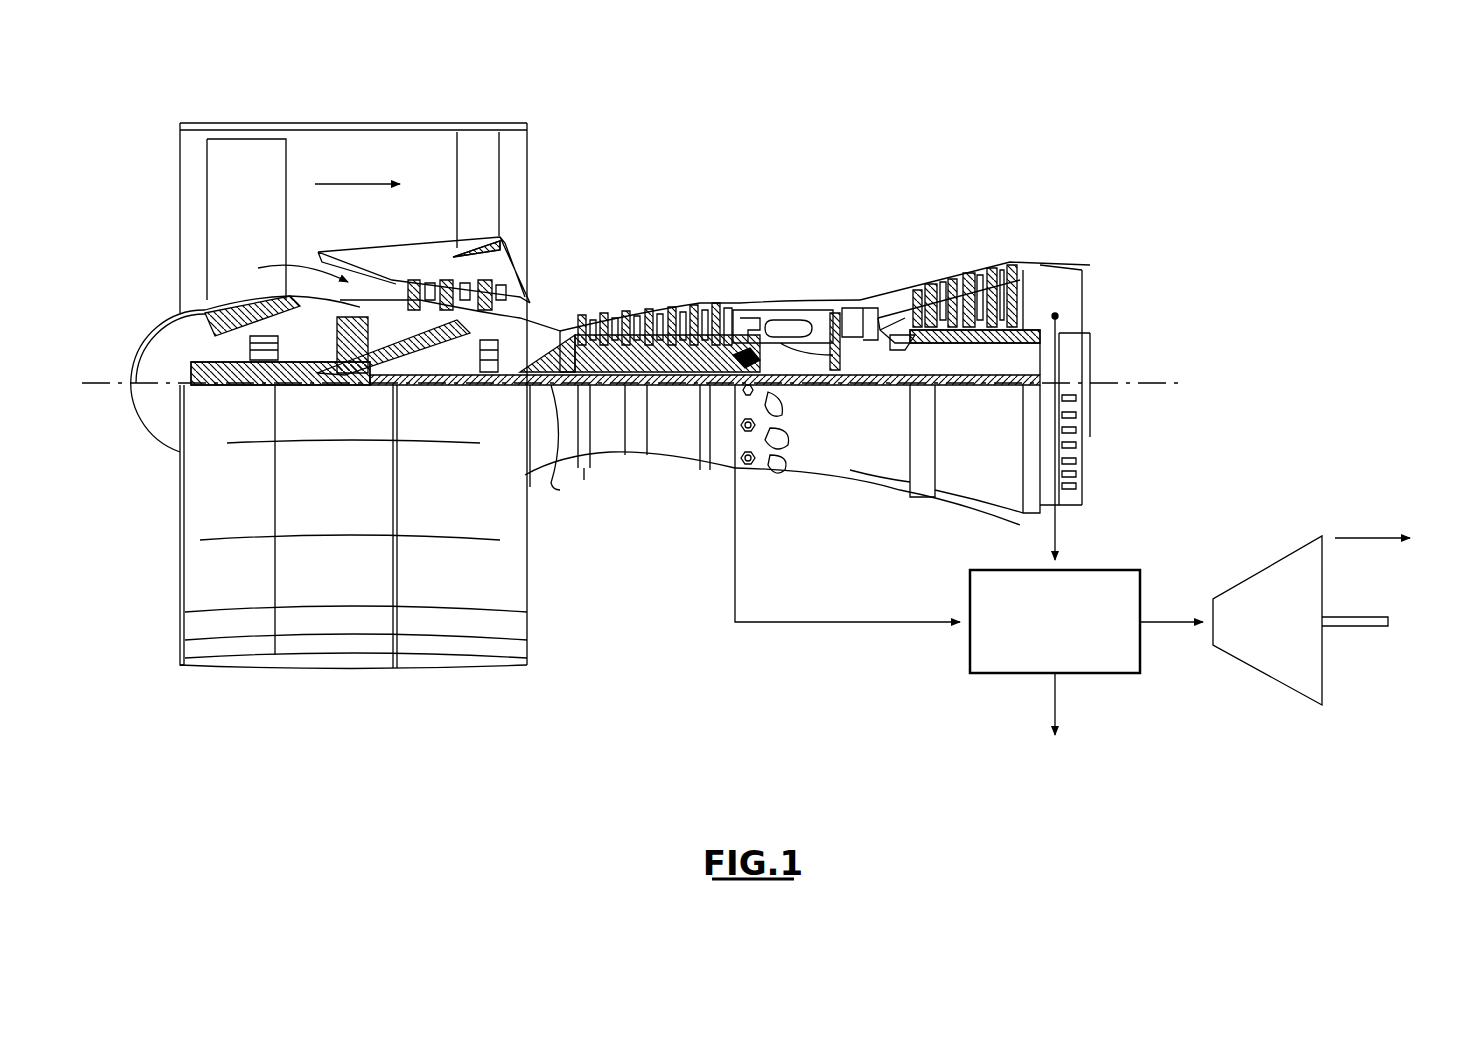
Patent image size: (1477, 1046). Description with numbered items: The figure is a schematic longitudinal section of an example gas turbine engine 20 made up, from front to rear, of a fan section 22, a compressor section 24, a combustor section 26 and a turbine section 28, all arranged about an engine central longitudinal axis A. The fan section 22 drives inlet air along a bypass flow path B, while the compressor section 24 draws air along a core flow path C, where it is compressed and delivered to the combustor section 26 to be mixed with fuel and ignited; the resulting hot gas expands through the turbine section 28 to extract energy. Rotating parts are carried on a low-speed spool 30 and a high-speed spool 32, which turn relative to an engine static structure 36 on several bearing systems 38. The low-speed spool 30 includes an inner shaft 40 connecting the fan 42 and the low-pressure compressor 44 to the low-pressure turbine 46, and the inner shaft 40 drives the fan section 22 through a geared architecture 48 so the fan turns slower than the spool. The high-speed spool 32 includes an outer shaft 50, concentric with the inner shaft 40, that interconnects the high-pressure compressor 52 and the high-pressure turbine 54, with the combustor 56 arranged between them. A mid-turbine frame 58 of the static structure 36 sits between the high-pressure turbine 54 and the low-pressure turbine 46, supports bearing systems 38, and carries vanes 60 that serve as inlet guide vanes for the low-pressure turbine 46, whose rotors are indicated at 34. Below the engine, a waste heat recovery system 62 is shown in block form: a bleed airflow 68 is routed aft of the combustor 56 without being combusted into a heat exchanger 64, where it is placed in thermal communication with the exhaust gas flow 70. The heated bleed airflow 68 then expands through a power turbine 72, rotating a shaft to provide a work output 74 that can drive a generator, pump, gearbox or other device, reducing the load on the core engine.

The gas turbine engine 20 is at (810, 150).
The fan section 22 is at (378, 88).
The compressor section 24 is at (392, 226).
The combustor section 26 is at (852, 226).
The turbine section 28 is at (860, 226).
The low-speed spool 30 is at (678, 400).
The high-speed spool 32 is at (718, 331).
The turbine rotors 34 is at (990, 347).
The engine static structure 36 is at (715, 473).
The bearing systems 38 is at (255, 385).
The inner shaft 40 is at (630, 445).
The fan 42 is at (229, 233).
The low-pressure compressor section 44 is at (503, 249).
The low-pressure turbine section 46 is at (970, 275).
The geared architecture 48 is at (361, 368).
The outer shaft 50 is at (799, 386).
The high-pressure compressor section 52 is at (642, 327).
The high-pressure turbine section 54 is at (850, 310).
The combustor 56 is at (792, 330).
The mid-turbine frame 58 is at (898, 287).
The vanes 60 is at (918, 353).
The waste heat recovery system 62 is at (858, 738).
The heat exchanger 64 is at (1097, 675).
The bleed airflow 68 is at (745, 527).
The exhaust gas flow 70 is at (1070, 452).
The power turbine 72 is at (1278, 668).
The work output 74 is at (1393, 614).
The engine central longitudinal axis A is at (1164, 383).
The bypass flow path B is at (355, 183).
The core flow path C is at (292, 270).